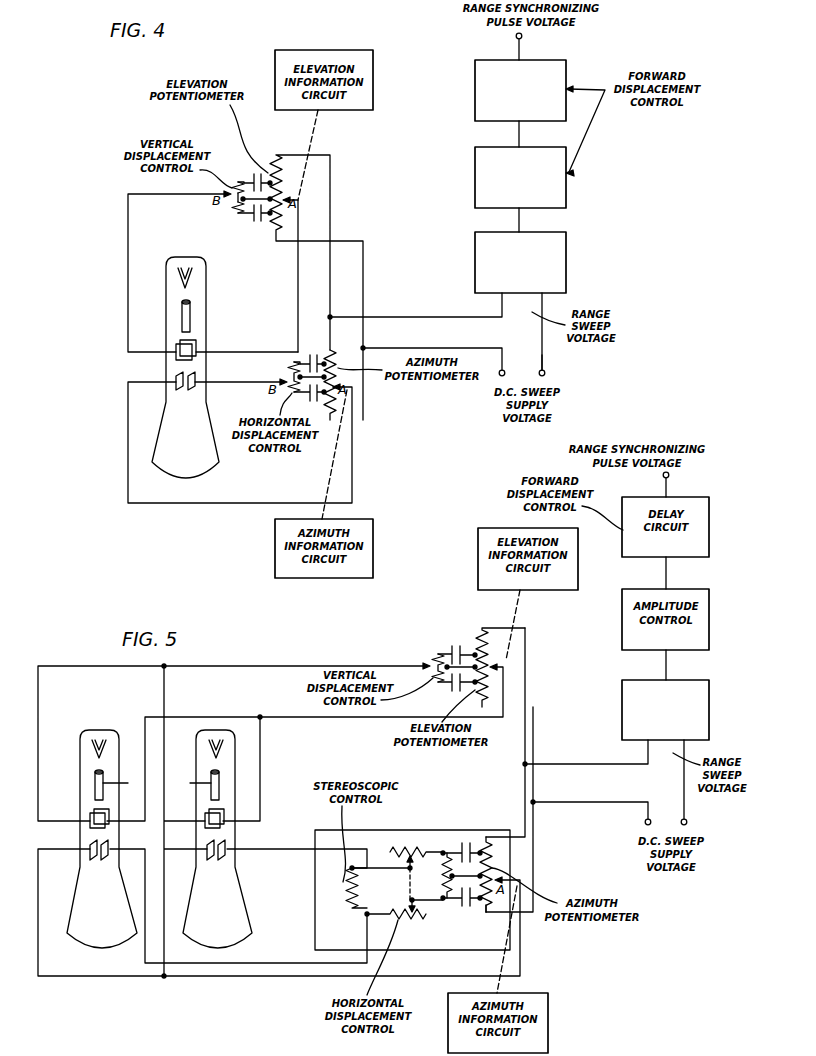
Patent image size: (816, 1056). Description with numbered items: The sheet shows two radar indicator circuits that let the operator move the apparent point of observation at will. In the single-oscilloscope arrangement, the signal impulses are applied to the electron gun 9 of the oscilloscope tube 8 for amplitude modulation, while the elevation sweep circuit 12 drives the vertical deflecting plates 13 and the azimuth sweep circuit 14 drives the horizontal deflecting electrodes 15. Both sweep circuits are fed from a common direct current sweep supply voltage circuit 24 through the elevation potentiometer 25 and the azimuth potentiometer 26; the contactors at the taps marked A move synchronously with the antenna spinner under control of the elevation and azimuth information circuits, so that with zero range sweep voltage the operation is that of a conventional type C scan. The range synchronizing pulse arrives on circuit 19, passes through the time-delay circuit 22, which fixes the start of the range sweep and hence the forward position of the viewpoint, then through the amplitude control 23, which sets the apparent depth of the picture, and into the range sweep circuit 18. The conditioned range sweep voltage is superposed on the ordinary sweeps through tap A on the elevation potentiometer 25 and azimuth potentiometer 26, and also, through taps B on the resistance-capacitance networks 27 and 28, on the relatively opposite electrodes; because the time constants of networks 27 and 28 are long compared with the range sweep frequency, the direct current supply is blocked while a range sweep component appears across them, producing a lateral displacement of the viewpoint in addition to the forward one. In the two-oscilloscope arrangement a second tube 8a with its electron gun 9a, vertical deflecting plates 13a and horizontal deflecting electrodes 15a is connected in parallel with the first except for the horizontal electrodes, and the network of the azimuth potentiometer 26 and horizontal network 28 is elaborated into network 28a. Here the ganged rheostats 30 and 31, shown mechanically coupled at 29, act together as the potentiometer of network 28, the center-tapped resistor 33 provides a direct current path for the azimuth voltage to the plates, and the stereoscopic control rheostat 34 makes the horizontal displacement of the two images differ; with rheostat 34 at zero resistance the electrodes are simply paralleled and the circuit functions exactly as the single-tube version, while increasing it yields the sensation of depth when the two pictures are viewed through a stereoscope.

In FIG. 4, the oscilloscope tube 8 is at (203, 466).
In FIG. 5, the oscilloscope tube 8 is at (75, 935).
In FIG. 5, the second oscilloscope tube 8a is at (237, 935).
In FIG. 4, the electron gun 9 is at (190, 317).
In FIG. 5, the electron gun 9 is at (95, 783).
In FIG. 5, the electron gun of second tube 9a is at (219, 783).
In FIG. 4, the elevation sweep circuit 12 is at (128, 248).
In FIG. 4, the vertical deflecting plates 13 is at (194, 360).
In FIG. 5, the vertical deflecting plates 13 is at (90, 823).
In FIG. 5, the vertical deflecting plates of second tube 13a is at (220, 829).
In FIG. 4, the azimuth sweep circuit 14 is at (265, 494).
In FIG. 4, the horizontal deflecting electrodes 15 is at (180, 388).
In FIG. 5, the horizontal deflecting electrodes 15 is at (98, 857).
In FIG. 5, the horizontal deflecting electrodes of second tube 15a is at (218, 857).
In FIG. 4, the range sweep circuit 18 is at (560, 262).
In FIG. 5, the range sweep circuit 18 is at (704, 702).
In FIG. 4, the range synchronizing pulse circuit 19 is at (523, 52).
In FIG. 4, the time-delay circuit 22 is at (560, 70).
In FIG. 4, the amplitude control 23 is at (560, 197).
In FIG. 4, the direct current sweep supply voltage circuit 24 is at (532, 356).
In FIG. 4, the elevation potentiometer 25 is at (273, 172).
In FIG. 4, the azimuth potentiometer 26 is at (332, 354).
In FIG. 5, the azimuth potentiometer 26 is at (486, 907).
In FIG. 4, the vertical displacement resistance-capacitance network 27 is at (236, 209).
In FIG. 5, the vertical displacement resistance-capacitance network 27 is at (435, 660).
In FIG. 4, the horizontal displacement resistance-capacitance network 28 is at (289, 378).
In FIG. 5, the elaborated azimuth network 28a is at (486, 838).
In FIG. 5, the ganged control coupling 29 is at (405, 887).
In FIG. 5, the ganged rheostat 30 is at (412, 850).
In FIG. 5, the ganged rheostat 31 is at (398, 916).
In FIG. 5, the center-tapped resistor 33 is at (446, 893).
In FIG. 5, the stereoscopic control rheostat 34 is at (340, 890).